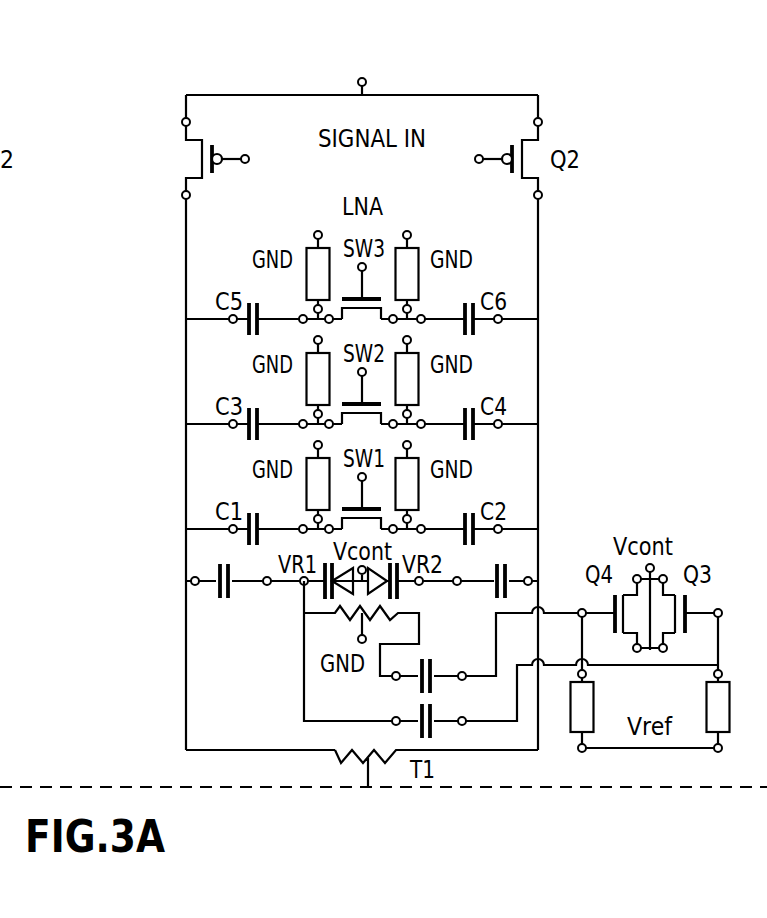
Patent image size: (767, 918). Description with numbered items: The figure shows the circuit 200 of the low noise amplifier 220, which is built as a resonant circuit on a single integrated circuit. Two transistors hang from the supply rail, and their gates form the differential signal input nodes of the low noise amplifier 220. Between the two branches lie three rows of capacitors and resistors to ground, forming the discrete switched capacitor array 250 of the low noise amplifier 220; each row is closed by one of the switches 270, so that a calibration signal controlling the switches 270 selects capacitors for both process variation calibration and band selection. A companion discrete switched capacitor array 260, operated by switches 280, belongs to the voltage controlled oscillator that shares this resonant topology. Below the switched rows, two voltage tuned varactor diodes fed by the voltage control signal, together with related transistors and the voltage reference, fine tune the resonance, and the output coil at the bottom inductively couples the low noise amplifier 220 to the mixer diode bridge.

The low noise amplifier circuit 200 is at (600, 88).
The LNA 220 is at (592, 330).
The discrete switched capacitor array 250 is at (200, 237).
The discrete switched capacitor array 260 is at (0, 218).
The switches 270 is at (360, 317).
The switches 280 is at (0, 339).